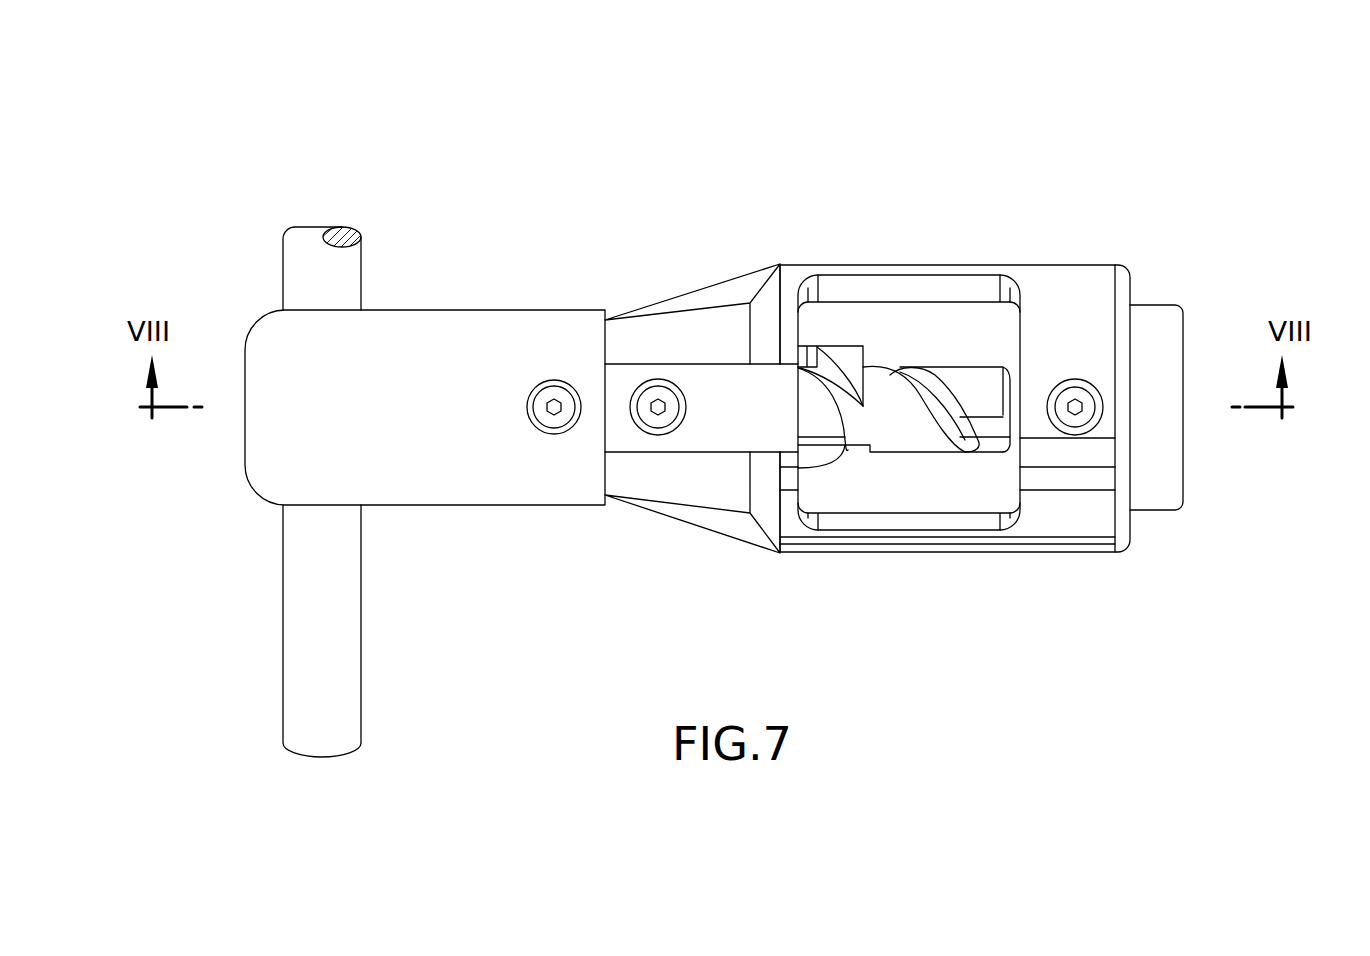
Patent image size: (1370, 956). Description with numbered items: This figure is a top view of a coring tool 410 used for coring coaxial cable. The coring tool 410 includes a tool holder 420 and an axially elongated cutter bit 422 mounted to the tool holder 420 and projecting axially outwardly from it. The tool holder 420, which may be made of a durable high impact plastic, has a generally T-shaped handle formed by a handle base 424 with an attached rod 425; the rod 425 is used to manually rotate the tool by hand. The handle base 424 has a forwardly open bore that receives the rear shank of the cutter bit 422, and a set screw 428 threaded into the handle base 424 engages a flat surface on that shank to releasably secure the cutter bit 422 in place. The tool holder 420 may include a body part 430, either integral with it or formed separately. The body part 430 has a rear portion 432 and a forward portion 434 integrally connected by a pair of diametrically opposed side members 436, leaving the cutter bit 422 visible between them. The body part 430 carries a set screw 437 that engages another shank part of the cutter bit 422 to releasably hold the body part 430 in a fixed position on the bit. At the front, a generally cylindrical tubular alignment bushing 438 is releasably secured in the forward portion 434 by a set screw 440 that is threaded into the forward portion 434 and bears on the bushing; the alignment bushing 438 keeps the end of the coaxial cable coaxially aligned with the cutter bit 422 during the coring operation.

The coring tool 410 is at (1092, 158).
The tool holder 420 is at (540, 266).
The cutter bit 422 is at (892, 326).
The handle base 424 is at (437, 325).
The rod 425 is at (340, 600).
The set screw 428 is at (530, 395).
The body part 430 is at (798, 265).
The rear portion 432 is at (685, 523).
The forward portion 434 is at (1062, 552).
The side members 436 is at (1005, 265).
The set screw 437 is at (680, 420).
The alignment bushing 438 is at (1173, 347).
The set screw 440 is at (1072, 378).